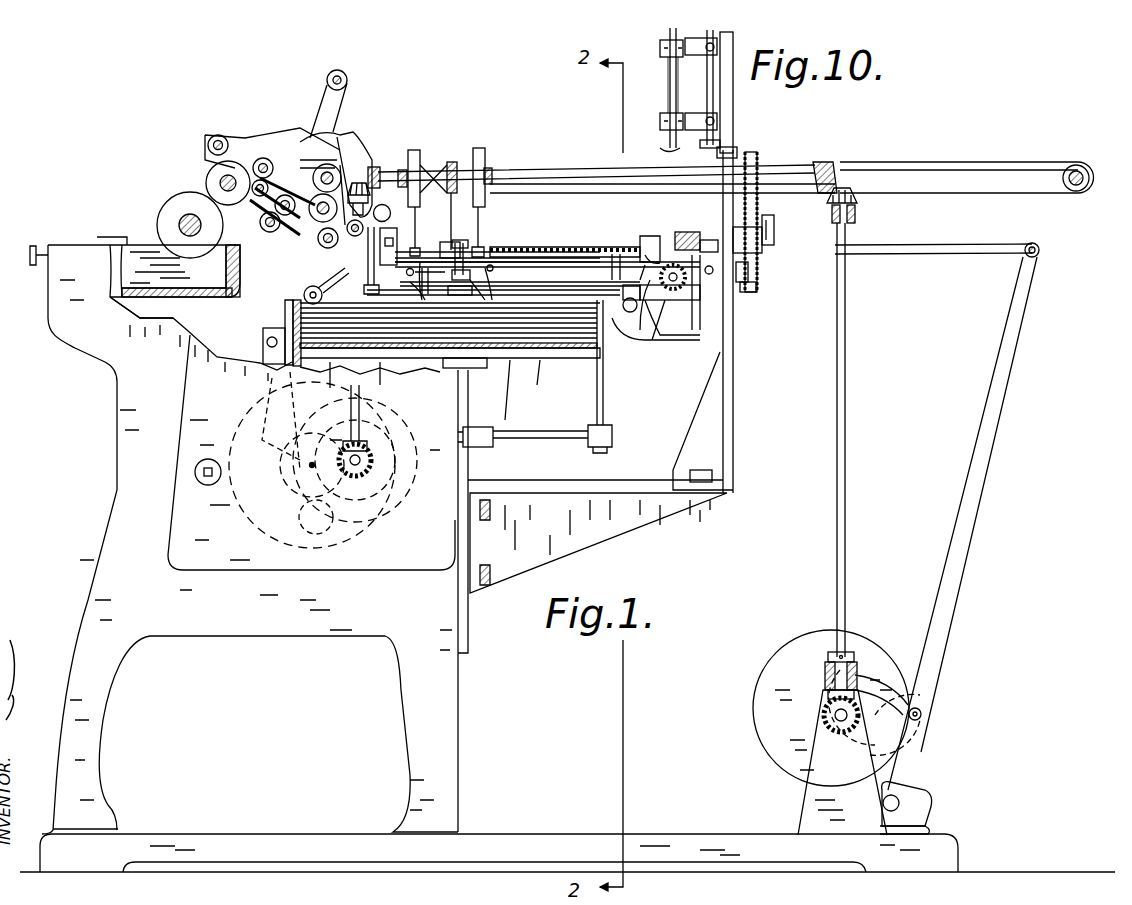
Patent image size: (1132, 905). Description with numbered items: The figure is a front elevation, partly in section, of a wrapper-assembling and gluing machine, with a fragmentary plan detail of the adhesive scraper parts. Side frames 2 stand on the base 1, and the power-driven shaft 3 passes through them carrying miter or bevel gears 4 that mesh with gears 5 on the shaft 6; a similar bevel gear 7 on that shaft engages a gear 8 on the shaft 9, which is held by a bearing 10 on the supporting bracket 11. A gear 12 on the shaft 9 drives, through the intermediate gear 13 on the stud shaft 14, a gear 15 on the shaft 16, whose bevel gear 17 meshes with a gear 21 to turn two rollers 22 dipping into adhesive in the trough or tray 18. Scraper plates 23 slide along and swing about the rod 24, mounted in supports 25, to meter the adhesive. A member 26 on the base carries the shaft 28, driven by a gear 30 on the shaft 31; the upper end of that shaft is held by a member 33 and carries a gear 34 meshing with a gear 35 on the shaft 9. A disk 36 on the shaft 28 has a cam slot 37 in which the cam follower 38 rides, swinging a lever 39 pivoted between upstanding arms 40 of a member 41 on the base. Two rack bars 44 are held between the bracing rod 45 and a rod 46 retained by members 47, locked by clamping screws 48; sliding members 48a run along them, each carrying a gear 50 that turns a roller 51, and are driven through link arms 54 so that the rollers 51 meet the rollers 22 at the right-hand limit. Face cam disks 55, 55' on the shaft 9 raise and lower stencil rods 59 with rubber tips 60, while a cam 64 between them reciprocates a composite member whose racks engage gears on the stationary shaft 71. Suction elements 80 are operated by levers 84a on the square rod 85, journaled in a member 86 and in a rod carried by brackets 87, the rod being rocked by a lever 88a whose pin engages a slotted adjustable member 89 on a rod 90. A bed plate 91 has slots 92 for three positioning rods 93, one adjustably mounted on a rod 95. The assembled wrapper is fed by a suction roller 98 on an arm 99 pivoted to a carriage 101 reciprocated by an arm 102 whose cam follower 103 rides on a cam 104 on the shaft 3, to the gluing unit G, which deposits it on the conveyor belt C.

In FIG. 1, the base 1 is at (505, 846).
In FIG. 1, the side frames 2 is at (458, 703).
In FIG. 1, the shaft 3 is at (335, 470).
In FIG. 1, the miter or bevel gears 4 is at (370, 470).
In FIG. 1, the gears 5 is at (375, 456).
In FIG. 1, the shaft 6 is at (284, 188).
In FIG. 1, the miter or bevel gear 7 is at (356, 186).
In FIG. 1, the gear 8 is at (385, 205).
In FIG. 1, the shaft 9 is at (560, 168).
In FIG. 1, the bearing 10 is at (728, 172).
In FIG. 1, the supporting bracket 11 is at (725, 418).
In FIG. 1, the gear 12 is at (750, 152).
In FIG. 1, the intermediate gear 13 is at (765, 242).
In FIG. 1, the stud shaft 14 is at (762, 255).
In FIG. 1, the gear 15 is at (758, 290).
In FIG. 1, the shaft 16 is at (700, 300).
In FIG. 1, the bevel gear 17 is at (665, 300).
In FIG. 1, the trough or tray 18 is at (628, 312).
In FIG. 1, the gear 21 is at (658, 330).
In FIG. 1, the rollers 22 is at (655, 270).
In FIG. 10, the rollers 22 is at (660, 47).
In FIG. 1, the scraper plates 23 is at (705, 240).
In FIG. 10, the scraper plates 23 is at (668, 135).
In FIG. 1, the rod 24 is at (700, 290).
In FIG. 10, the rod 24 is at (715, 93).
In FIG. 10, the supports 25 is at (720, 143).
In FIG. 1, the member 26 is at (800, 810).
In FIG. 1, the shaft 28 is at (838, 725).
In FIG. 1, the gear 30 is at (820, 726).
In FIG. 1, the shaft 31 is at (836, 478).
In FIG. 1, the member 33 is at (785, 236).
In FIG. 1, the gear 34 is at (858, 196).
In FIG. 1, the gear 35 is at (832, 162).
In FIG. 1, the disk 36 is at (810, 645).
In FIG. 1, the cam slot 37 is at (868, 670).
In FIG. 1, the cam follower 38 is at (922, 712).
In FIG. 1, the lever 39 is at (968, 557).
In FIG. 1, the upstanding arms 40 is at (925, 812).
In FIG. 1, the member 41 is at (930, 828).
In FIG. 1, the rack bars 44 is at (585, 250).
In FIG. 1, the stay or bracing rod 45 is at (395, 165).
In FIG. 1, the rod 46 is at (628, 250).
In FIG. 1, the members 47 is at (740, 205).
In FIG. 1, the clamping screws 48 is at (672, 228).
In FIG. 1, the sliding members 48a is at (648, 236).
In FIG. 1, the gear 50 is at (635, 240).
In FIG. 1, the roller 51 is at (620, 304).
In FIG. 1, the link arm 54 is at (930, 250).
In FIG. 1, the face cam disk 55 is at (427, 196).
In FIG. 1, the face cam disk 55' is at (511, 177).
In FIG. 1, the rods 59 is at (520, 205).
In FIG. 1, the tip or stencil 60 is at (440, 265).
In FIG. 1, the cam 64 is at (486, 165).
In FIG. 1, the stationary shaft 71 is at (530, 265).
In FIG. 1, the suction element 80 is at (425, 360).
In FIG. 1, the lever 84a is at (462, 289).
In FIG. 1, the square rod 85 is at (600, 266).
In FIG. 1, the member 86 is at (366, 258).
In FIG. 1, the brackets 87 is at (648, 300).
In FIG. 1, the lever 88a is at (495, 280).
In FIG. 1, the adjustable member 89 is at (440, 272).
In FIG. 1, the rod 90 is at (408, 272).
In FIG. 1, the bed plate 91 is at (566, 358).
In FIG. 1, the slots 92 is at (452, 395).
In FIG. 1, the positioning rods 93 is at (605, 404).
In FIG. 1, the rod 95 is at (540, 438).
In FIG. 1, the suction roller 98 is at (262, 305).
In FIG. 1, the arm 99 is at (305, 283).
In FIG. 1, the carriage 101 is at (370, 420).
In FIG. 1, the arm 102 is at (272, 426).
In FIG. 1, the cam follower 103 is at (278, 506).
In FIG. 1, the cam 104 is at (360, 512).
In FIG. 1, the conveyor belt C is at (414, 143).
In FIG. 1, the gluing unit G is at (205, 182).